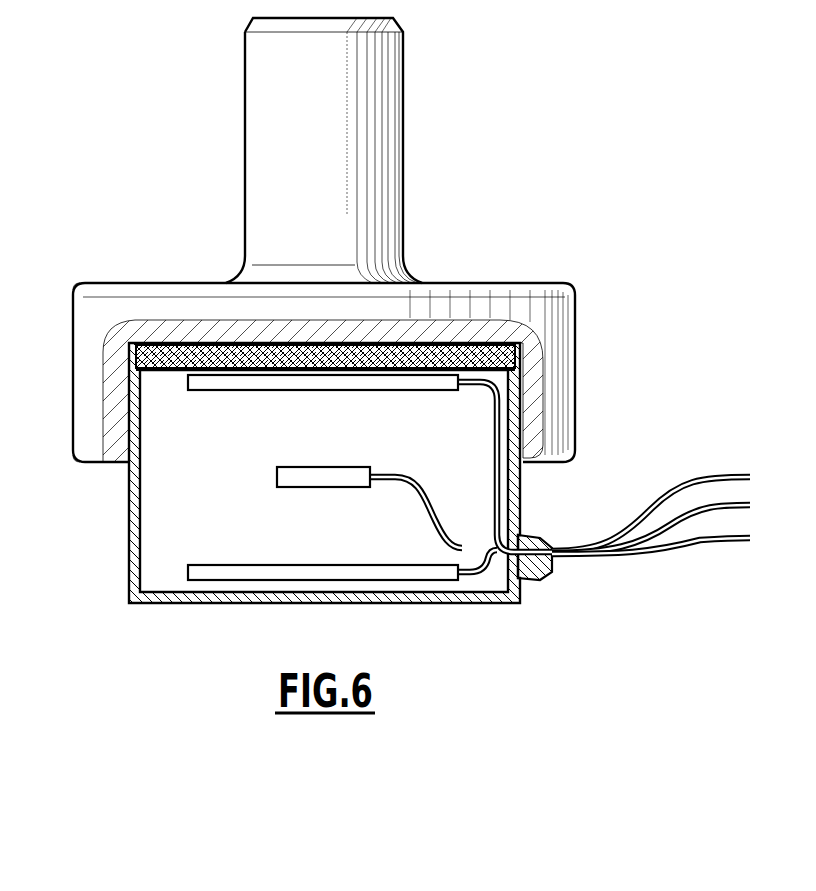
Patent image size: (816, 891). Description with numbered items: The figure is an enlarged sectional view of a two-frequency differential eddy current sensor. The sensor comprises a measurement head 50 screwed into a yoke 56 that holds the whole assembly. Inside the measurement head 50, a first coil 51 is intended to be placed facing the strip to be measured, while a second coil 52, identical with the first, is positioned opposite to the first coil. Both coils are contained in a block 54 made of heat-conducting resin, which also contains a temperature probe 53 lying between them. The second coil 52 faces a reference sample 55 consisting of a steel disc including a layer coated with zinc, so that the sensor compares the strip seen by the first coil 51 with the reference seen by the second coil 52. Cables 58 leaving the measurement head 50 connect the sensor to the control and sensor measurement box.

The measurement head 50 is at (116, 576).
The first coil 51 is at (222, 573).
The second coil 52 is at (213, 385).
The temperature probe 53 is at (282, 478).
The block 54 is at (470, 428).
The reference sample 55 is at (478, 352).
The yoke 56 is at (388, 165).
The cables 58 is at (695, 541).